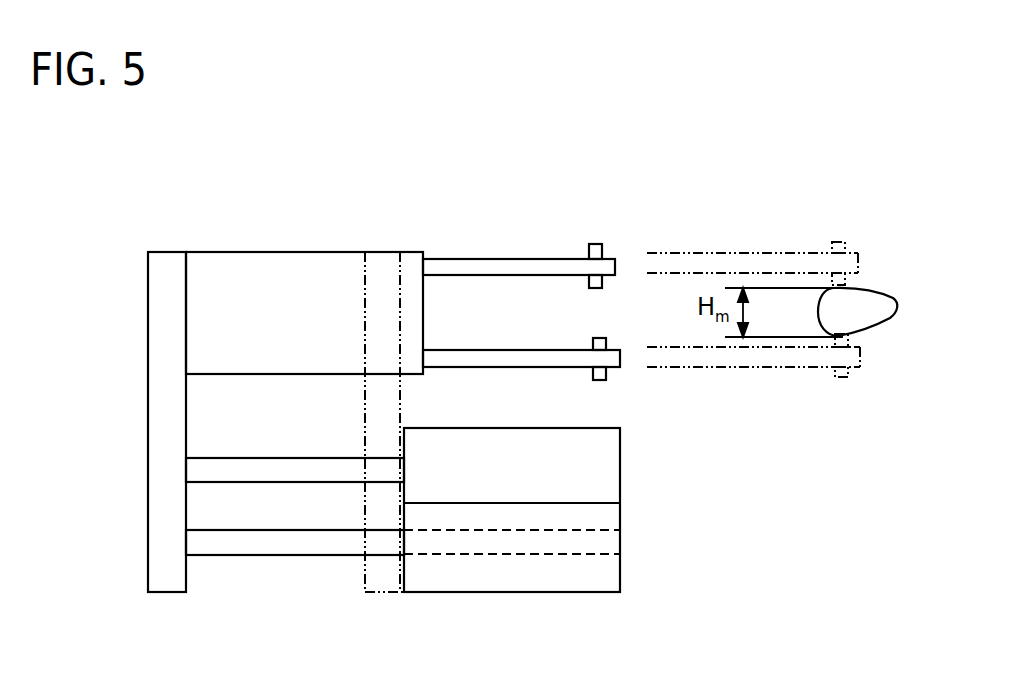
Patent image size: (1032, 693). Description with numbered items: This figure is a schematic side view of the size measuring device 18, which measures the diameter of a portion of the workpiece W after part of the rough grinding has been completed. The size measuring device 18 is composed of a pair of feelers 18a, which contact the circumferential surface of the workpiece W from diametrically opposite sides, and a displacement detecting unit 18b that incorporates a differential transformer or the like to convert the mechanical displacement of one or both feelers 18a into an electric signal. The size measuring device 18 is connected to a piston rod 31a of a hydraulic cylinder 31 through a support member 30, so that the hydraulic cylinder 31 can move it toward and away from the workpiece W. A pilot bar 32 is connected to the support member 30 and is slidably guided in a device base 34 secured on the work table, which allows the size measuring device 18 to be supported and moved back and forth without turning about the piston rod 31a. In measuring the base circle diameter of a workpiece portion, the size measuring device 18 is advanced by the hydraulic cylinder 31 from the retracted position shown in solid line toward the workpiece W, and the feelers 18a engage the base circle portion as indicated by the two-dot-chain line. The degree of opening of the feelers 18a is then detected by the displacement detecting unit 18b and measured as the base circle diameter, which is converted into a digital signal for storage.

The size measuring device 18 is at (542, 166).
The feelers 18a is at (473, 360).
The displacement detecting unit 18b is at (263, 275).
The support member 30 is at (160, 313).
The hydraulic cylinder 31 is at (603, 473).
The piston rod 31a is at (210, 470).
The pilot bar 32 is at (212, 542).
The device base 34 is at (488, 563).
The workpiece W is at (858, 310).